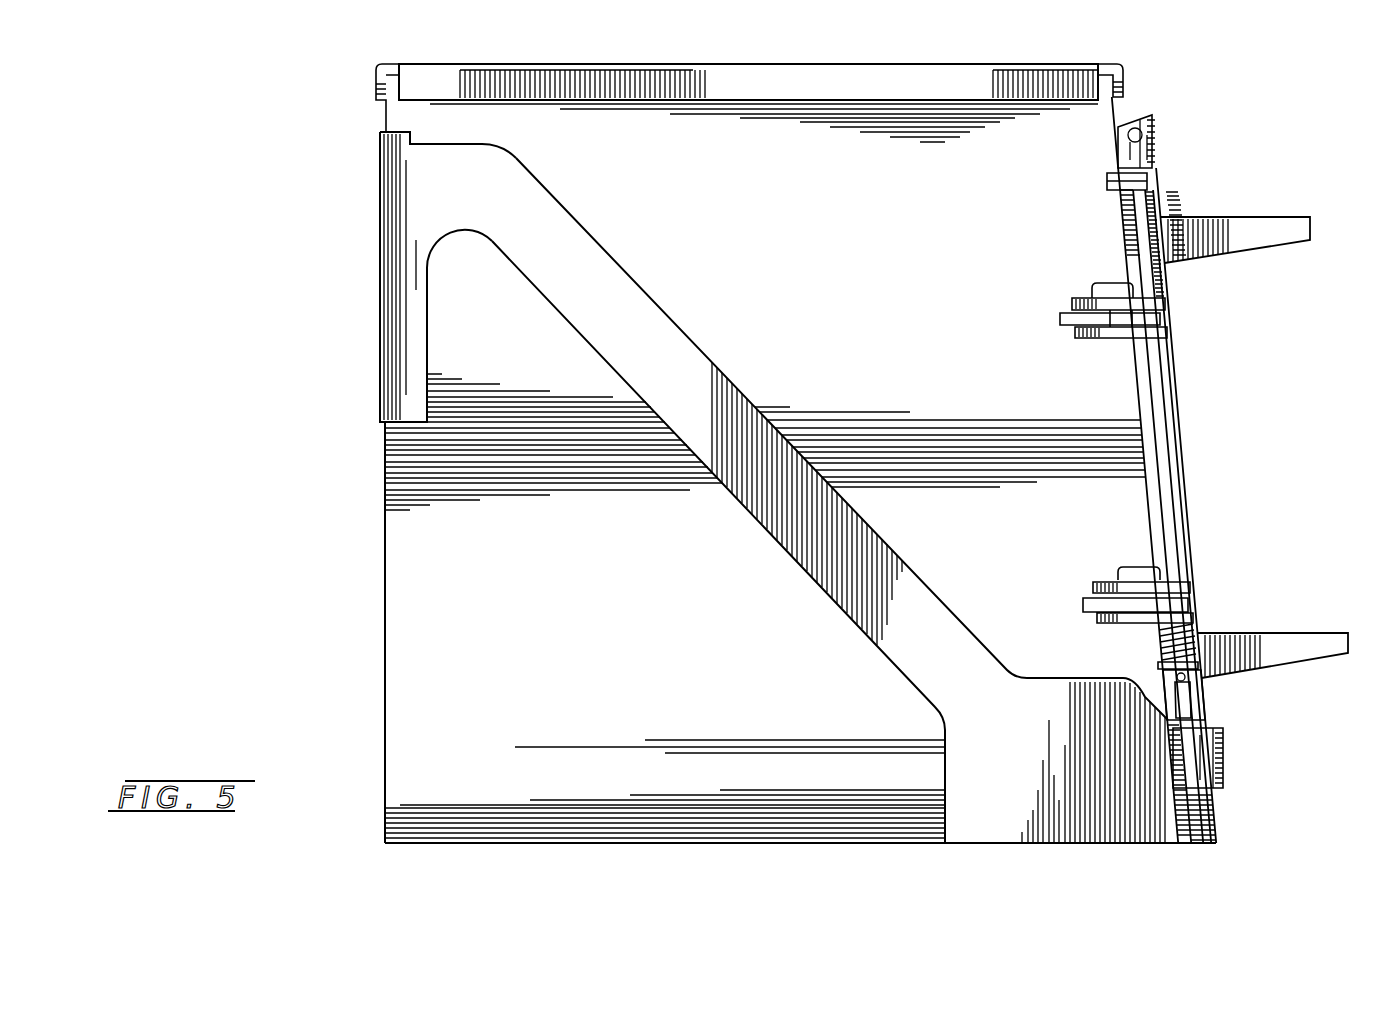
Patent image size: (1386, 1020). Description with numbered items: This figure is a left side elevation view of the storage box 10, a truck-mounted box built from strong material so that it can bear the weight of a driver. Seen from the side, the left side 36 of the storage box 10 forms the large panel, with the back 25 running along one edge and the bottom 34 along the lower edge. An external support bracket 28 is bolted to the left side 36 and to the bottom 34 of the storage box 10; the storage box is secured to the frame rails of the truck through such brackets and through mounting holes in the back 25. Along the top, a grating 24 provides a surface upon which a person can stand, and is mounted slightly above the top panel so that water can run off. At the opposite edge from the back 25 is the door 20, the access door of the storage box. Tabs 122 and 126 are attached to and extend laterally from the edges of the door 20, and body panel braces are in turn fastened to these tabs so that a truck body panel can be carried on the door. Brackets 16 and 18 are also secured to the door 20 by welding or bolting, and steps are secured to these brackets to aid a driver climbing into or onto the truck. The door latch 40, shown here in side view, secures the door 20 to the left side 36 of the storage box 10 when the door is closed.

The storage box 10 is at (270, 236).
The bracket 16 is at (1327, 633).
The bracket 18 is at (1257, 215).
The door 20 is at (1196, 483).
The grating 24 is at (1077, 63).
The back 25 is at (385, 588).
The external support bracket 28 is at (933, 638).
The bottom 34 is at (647, 845).
The left side 36 is at (792, 273).
The door latch 40 is at (1099, 358).
The tab 122 is at (1167, 138).
The tab 126 is at (1223, 750).